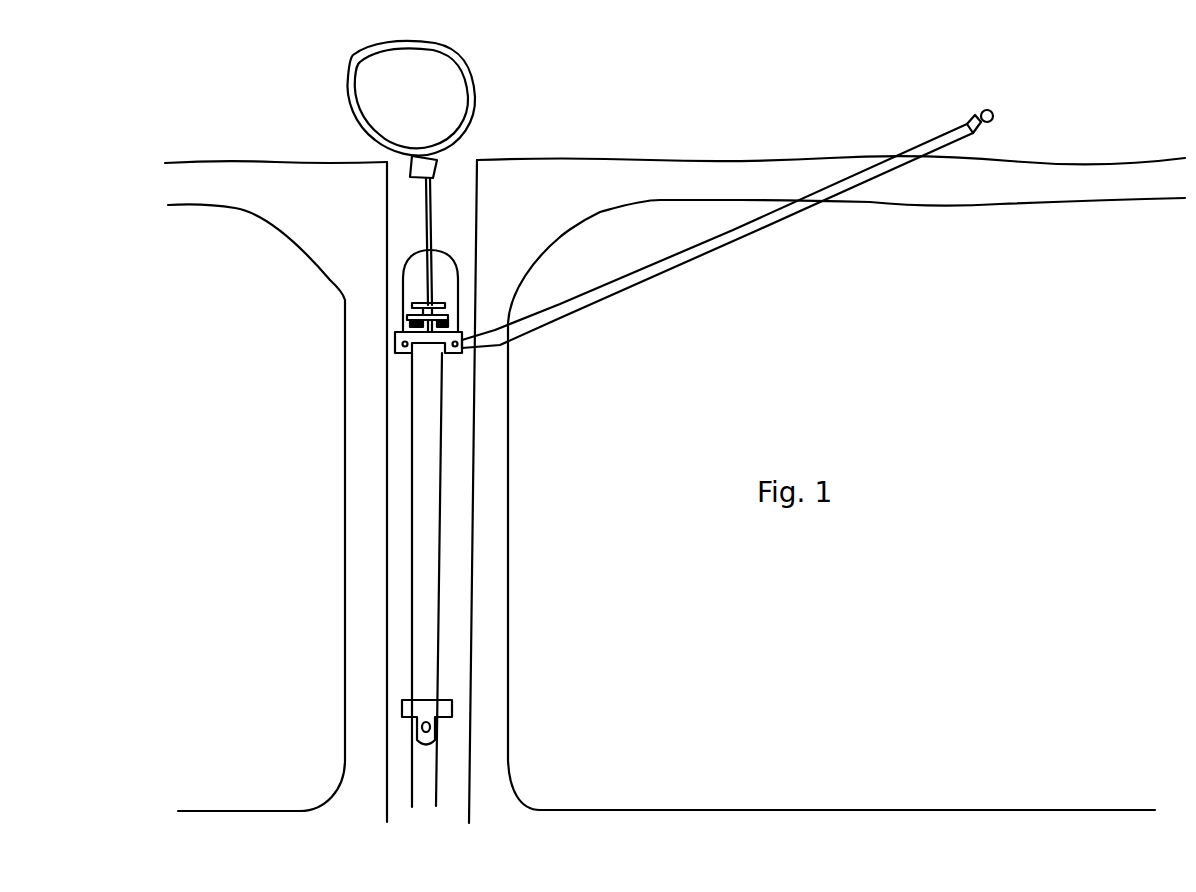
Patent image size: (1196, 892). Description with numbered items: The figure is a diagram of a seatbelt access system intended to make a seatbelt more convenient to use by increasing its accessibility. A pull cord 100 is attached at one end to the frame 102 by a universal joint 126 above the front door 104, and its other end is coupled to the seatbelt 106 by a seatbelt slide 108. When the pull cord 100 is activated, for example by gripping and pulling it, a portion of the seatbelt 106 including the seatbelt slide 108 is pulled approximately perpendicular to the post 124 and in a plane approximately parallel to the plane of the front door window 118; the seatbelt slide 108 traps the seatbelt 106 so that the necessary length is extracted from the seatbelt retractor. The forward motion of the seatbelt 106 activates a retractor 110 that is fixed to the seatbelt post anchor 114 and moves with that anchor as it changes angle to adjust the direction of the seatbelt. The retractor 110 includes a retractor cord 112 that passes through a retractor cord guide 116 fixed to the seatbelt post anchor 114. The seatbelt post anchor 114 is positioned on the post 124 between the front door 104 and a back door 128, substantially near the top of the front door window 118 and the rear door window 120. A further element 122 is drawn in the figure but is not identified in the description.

The pull cord 100 is at (698, 258).
The frame 102 is at (1021, 121).
The front door 104 is at (831, 176).
The seatbelt 106 is at (427, 555).
The seatbelt slide 108 is at (393, 343).
The retractor 110 is at (411, 109).
The retractor cord 112 is at (428, 212).
The seatbelt post anchor 114 is at (411, 296).
The retractor cord guide 116 is at (413, 306).
The front door window 118 is at (846, 504).
The rear door window 120 is at (256, 507).
The lower clamp 122 is at (430, 737).
The post 124 is at (460, 240).
The universal joint 126 is at (977, 110).
The back door 128 is at (276, 179).